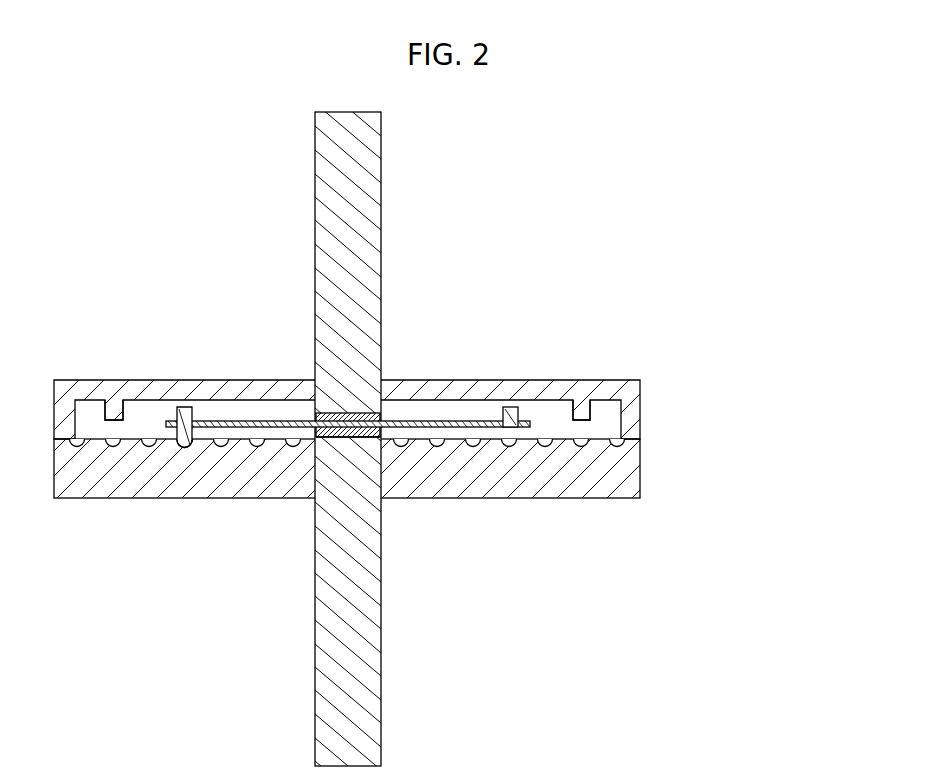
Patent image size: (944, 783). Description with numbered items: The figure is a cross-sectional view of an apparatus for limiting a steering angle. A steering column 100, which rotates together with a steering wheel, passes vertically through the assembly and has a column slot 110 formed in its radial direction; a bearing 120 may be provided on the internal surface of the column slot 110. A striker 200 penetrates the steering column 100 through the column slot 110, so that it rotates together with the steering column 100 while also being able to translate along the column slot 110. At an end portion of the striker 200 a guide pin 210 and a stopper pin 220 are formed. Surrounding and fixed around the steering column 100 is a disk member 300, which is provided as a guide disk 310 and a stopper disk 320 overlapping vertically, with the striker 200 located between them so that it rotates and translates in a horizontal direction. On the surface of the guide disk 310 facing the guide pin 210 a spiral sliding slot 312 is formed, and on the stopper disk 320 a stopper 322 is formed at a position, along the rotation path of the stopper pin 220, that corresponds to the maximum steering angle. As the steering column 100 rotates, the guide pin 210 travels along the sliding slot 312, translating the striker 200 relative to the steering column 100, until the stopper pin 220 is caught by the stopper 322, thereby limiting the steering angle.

The steering column 100 is at (370, 197).
The column slot 110 is at (345, 437).
The bearing 120 is at (348, 413).
The striker 200 is at (253, 421).
The guide pin 210 is at (185, 447).
The stopper pin 220 is at (185, 407).
The disk member 300 is at (421, 437).
The guide disk 310 is at (637, 475).
The sliding slot 312 is at (547, 446).
The stopper disk 320 is at (637, 397).
The stopper 322 is at (605, 400).